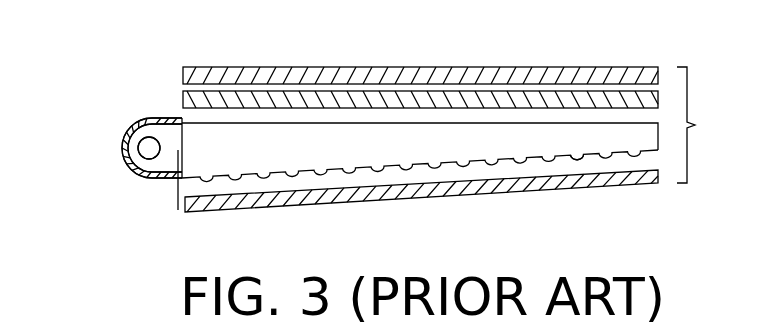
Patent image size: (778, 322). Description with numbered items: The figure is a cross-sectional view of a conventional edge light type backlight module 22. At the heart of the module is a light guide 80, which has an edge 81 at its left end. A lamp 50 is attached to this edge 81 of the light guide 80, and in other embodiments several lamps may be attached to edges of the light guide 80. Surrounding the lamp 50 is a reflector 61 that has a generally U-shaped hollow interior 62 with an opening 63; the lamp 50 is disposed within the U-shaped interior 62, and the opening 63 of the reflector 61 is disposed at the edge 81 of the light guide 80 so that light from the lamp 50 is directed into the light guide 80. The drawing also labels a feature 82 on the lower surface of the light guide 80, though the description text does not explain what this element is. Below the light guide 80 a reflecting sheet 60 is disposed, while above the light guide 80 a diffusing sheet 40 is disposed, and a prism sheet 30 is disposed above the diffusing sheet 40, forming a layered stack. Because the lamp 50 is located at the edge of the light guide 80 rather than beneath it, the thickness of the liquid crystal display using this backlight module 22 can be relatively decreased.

The edge light type backlight module 22 is at (703, 125).
The prism sheet 30 is at (325, 67).
The diffusing sheet 40 is at (467, 92).
The lamp 50 is at (148, 148).
The reflecting sheet 60 is at (337, 204).
The reflector 61 is at (160, 178).
The U-shaped hollow interior 62 is at (142, 122).
The opening 63 is at (168, 122).
The light guide 80 is at (510, 157).
The edge 81 is at (178, 200).
The protrusion 82 is at (583, 156).